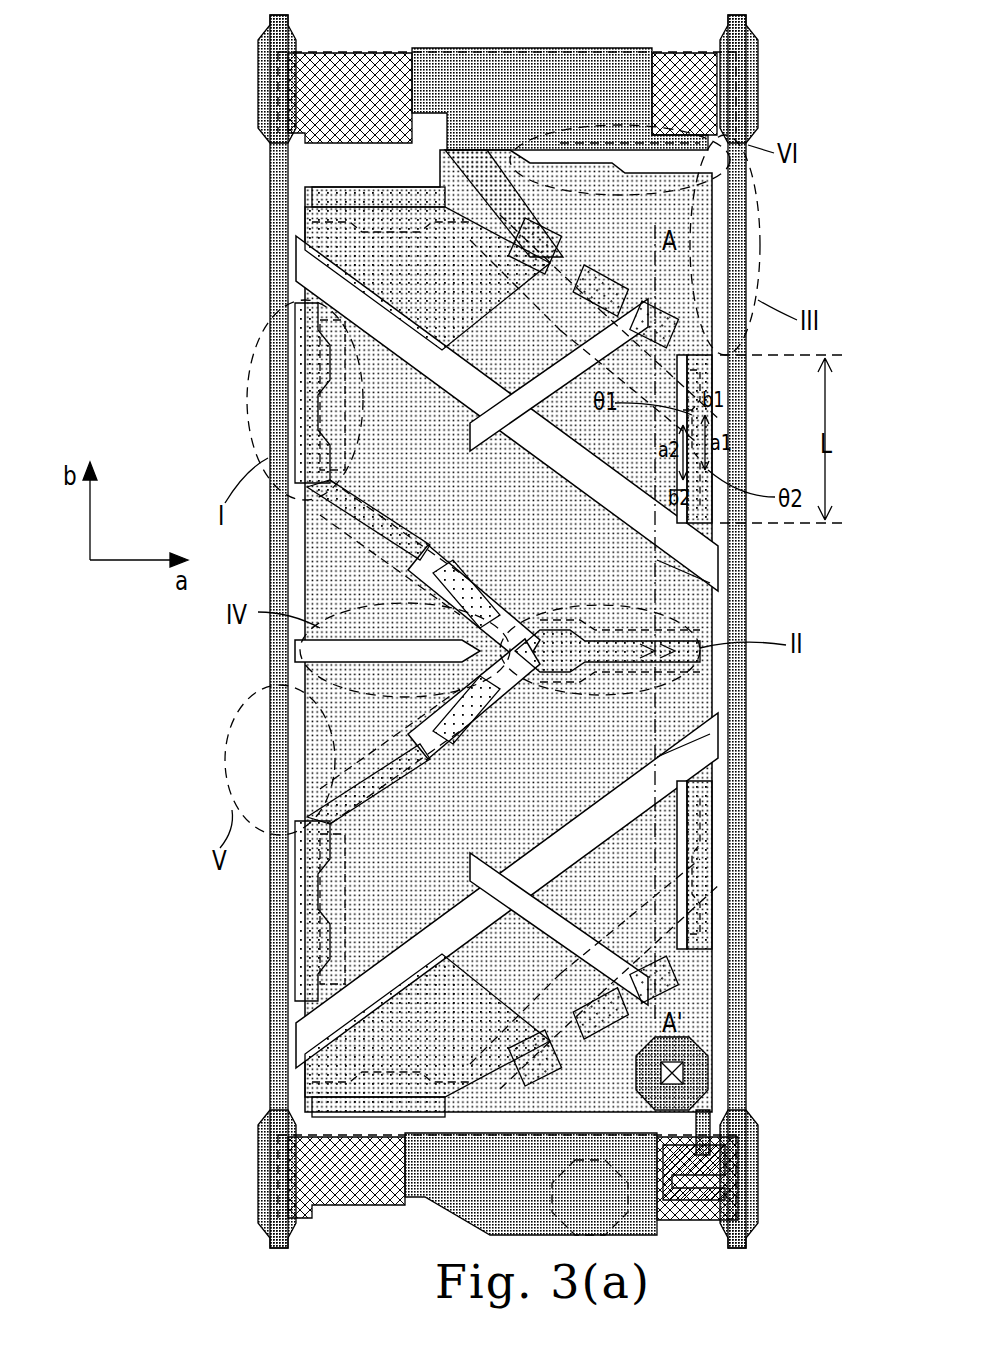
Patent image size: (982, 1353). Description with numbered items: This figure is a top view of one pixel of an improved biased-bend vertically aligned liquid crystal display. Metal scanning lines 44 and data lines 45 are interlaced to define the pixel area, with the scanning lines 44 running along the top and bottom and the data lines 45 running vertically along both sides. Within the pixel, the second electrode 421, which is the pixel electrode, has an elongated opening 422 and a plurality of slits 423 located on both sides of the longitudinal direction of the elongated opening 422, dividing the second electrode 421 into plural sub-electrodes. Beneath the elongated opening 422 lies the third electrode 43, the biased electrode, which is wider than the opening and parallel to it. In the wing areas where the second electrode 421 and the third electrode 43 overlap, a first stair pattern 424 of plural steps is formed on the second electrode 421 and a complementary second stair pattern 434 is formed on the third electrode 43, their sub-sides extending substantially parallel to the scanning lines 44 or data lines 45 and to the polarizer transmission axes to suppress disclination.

The third electrode 43 is at (330, 198).
The second electrode 421 is at (330, 236).
The slits 423 is at (330, 283).
The second stair pattern 434 is at (330, 362).
The first stair pattern 424 is at (330, 440).
The elongated opening 422 is at (680, 632).
The data lines 45 is at (745, 745).
The scanning lines 44 is at (368, 1200).